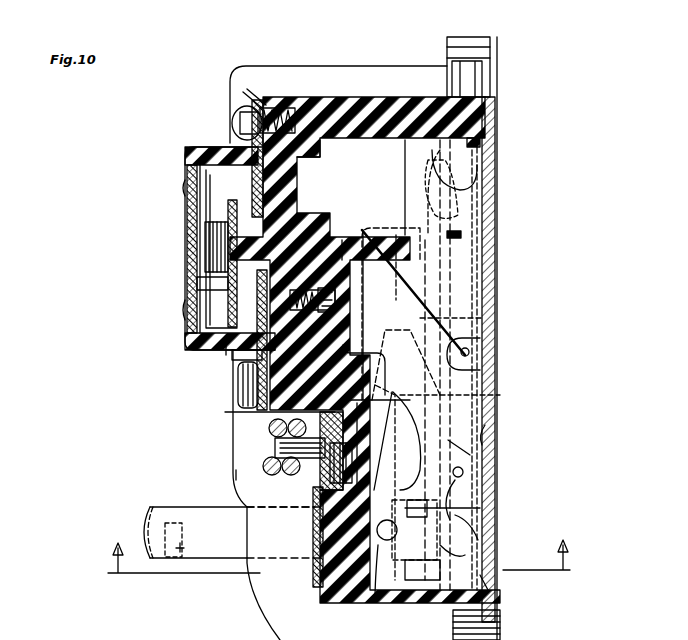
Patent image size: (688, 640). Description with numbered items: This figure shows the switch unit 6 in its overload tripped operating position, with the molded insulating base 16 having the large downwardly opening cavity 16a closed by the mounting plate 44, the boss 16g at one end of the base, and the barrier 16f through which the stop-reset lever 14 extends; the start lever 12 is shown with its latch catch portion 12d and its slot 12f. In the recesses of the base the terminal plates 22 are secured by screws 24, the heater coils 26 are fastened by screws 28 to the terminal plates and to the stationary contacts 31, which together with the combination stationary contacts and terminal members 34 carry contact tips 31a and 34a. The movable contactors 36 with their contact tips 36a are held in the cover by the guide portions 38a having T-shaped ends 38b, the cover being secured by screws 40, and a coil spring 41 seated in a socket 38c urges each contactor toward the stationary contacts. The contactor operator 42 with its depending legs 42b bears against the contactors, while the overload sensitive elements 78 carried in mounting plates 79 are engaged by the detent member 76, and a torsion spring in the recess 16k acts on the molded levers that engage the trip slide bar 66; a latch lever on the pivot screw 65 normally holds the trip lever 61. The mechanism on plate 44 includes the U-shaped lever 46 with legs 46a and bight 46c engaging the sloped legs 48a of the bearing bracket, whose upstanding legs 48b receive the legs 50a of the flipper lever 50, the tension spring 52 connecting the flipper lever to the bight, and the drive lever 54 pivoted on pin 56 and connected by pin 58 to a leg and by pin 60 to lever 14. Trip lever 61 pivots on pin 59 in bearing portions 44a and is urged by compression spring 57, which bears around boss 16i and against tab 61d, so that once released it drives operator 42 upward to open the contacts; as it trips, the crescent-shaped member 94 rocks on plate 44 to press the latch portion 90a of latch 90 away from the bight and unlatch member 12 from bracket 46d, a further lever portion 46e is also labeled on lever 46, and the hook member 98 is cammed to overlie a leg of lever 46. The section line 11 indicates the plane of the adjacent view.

The switch unit 6 is at (500, 130).
The section line 11- 11 is at (340, 573).
The start lever 12 is at (150, 526).
The latch catch portion 12d is at (414, 542).
The slot 12f is at (188, 545).
The stop-reset lever 14 is at (142, 522).
The molded insulating base 16 is at (350, 65).
The cavity 16a is at (330, 150).
The barrier 16f is at (236, 478).
The boss 16g is at (480, 83).
The boss 16i is at (389, 441).
The recesses 16k is at (335, 293).
The terminal plates 22 is at (310, 506).
The screws 24 is at (312, 526).
The heater coils 26 is at (270, 435).
The screws 28 is at (241, 386).
The stationary contacts 31 is at (245, 356).
The contact tips 31a is at (218, 363).
The combination stationary contacts and terminal members 34 is at (240, 118).
The contact tips 34a is at (255, 134).
The movable contactors 36 is at (190, 163).
The contact tips 36a is at (205, 152).
The guide portions 38a is at (200, 288).
The T-shaped ends 38b is at (285, 222).
The integral sockets 38c is at (200, 207).
The screws 40 is at (186, 186).
The coil spring 41 is at (205, 242).
The contactor operator 42 is at (368, 230).
The legs 42b is at (396, 235).
The mounting plate 44 is at (490, 288).
The bearing bracket portions 44a is at (478, 340).
The U-shaped lever 46 is at (450, 270).
The legs 46a is at (405, 162).
The bight 46c is at (440, 575).
The right angle bracket 46d is at (480, 496).
The rod foot 46e is at (488, 548).
The bifurcated angularly sloped legs 48a is at (466, 190).
The upstanding legs 48b is at (487, 430).
The flipper lever 50 is at (458, 212).
The legs 50a is at (425, 188).
The coiled tension spring 52 is at (462, 235).
The drive lever 54 is at (398, 545).
The pivot pin 56 is at (486, 388).
The compression spring 57 is at (462, 474).
The pivot pin 58 is at (486, 311).
The pivot pin 59 is at (470, 352).
The pivot pin 60 is at (377, 560).
The trip lever 61 is at (394, 295).
The tab 61d is at (470, 452).
The pivot screw 65 is at (342, 240).
The trip slide bar 66 is at (364, 370).
The detent member 76 is at (340, 478).
The overload sensitive elements 78 is at (265, 461).
The mounting plates 79 is at (270, 425).
The latch 90 is at (468, 600).
The latch portion 90a is at (492, 580).
The crescent-shaped member 94 is at (488, 527).
The hook member 98 is at (486, 510).